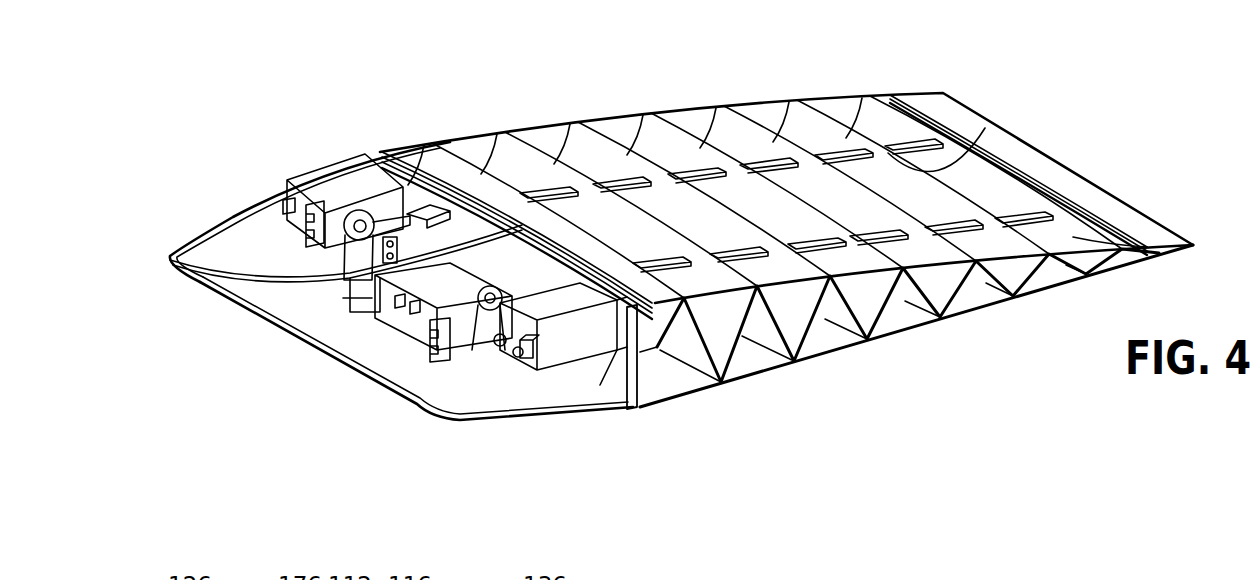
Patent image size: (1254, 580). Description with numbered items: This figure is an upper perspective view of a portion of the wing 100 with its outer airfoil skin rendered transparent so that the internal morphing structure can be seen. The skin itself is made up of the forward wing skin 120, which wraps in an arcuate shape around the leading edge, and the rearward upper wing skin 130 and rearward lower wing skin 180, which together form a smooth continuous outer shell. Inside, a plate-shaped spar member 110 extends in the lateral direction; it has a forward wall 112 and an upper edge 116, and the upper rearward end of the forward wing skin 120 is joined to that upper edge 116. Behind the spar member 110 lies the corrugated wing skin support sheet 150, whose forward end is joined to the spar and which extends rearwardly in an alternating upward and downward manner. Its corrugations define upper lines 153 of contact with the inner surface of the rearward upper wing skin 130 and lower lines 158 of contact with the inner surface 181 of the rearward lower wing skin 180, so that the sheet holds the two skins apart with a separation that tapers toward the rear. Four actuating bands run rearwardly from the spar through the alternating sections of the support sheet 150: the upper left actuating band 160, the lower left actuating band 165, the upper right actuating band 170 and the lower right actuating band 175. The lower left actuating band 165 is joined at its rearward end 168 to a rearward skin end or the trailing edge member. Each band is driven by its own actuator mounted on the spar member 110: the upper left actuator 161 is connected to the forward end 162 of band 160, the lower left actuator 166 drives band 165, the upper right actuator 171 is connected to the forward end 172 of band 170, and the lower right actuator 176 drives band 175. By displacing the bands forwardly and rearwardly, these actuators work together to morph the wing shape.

The wing 100 is at (247, 337).
The spar member 110 is at (600, 392).
The forward wall 112 is at (476, 262).
The upper edge 116 is at (363, 312).
The forward wing skin 120 is at (430, 423).
The rearward upper wing skin 130 is at (590, 116).
The wing skin support sheet 150 is at (895, 315).
The upper lines 153 is at (772, 108).
The lower lines 158 is at (765, 350).
The upper left actuating band 160 is at (435, 207).
The upper left actuator 161 is at (355, 310).
The forward end 162 is at (370, 208).
The lower left actuating band 165 is at (963, 165).
The lower left actuator 166 is at (318, 183).
The rearward end 168 is at (955, 137).
The upper right actuating band 170 is at (1013, 213).
The upper right actuator 171 is at (422, 338).
The forward end 172 is at (540, 290).
The lower right actuating band 175 is at (1073, 237).
The lower right actuator 176 is at (530, 365).
The rearward lower wing skin 180 is at (833, 365).
The inner surface 181 is at (965, 308).